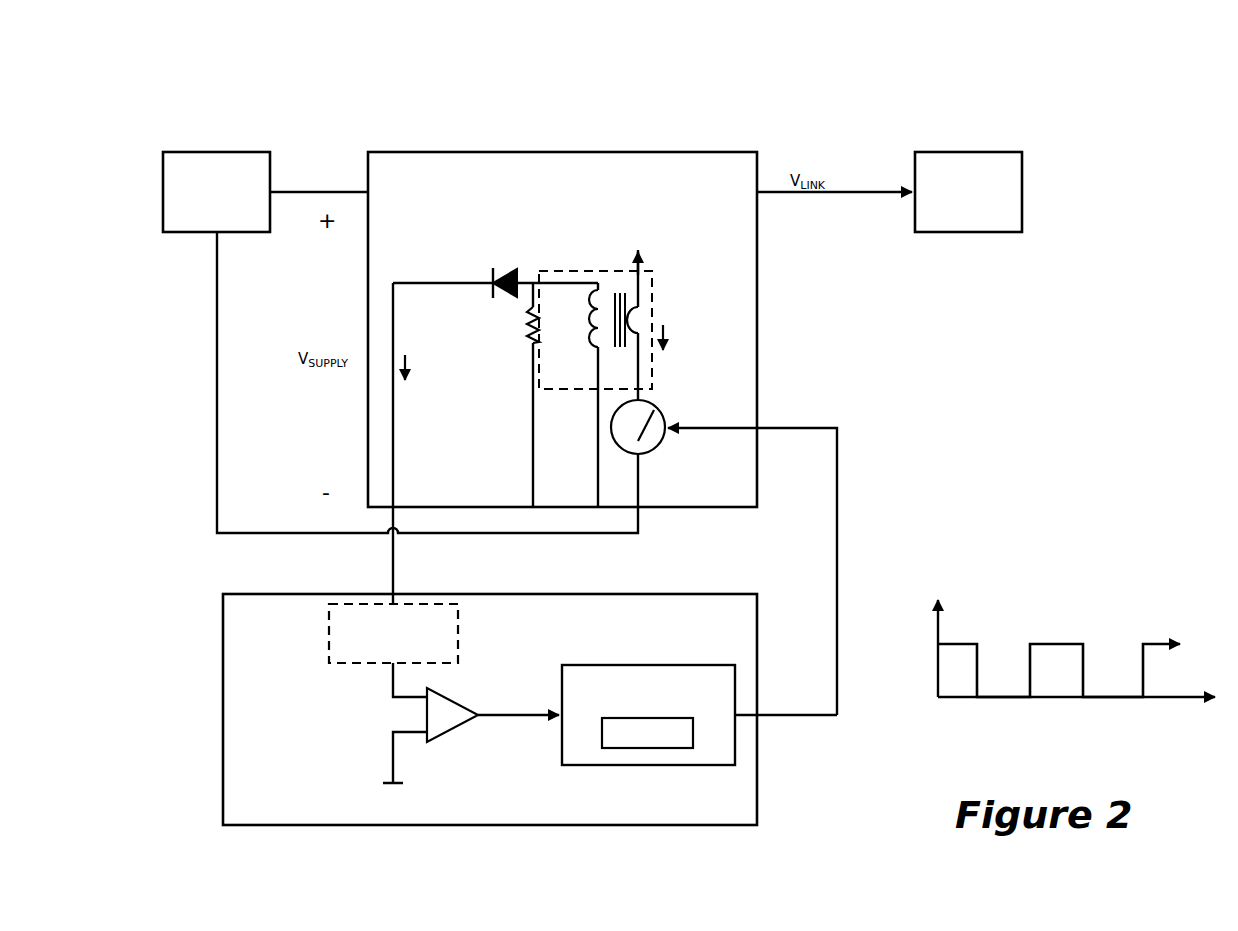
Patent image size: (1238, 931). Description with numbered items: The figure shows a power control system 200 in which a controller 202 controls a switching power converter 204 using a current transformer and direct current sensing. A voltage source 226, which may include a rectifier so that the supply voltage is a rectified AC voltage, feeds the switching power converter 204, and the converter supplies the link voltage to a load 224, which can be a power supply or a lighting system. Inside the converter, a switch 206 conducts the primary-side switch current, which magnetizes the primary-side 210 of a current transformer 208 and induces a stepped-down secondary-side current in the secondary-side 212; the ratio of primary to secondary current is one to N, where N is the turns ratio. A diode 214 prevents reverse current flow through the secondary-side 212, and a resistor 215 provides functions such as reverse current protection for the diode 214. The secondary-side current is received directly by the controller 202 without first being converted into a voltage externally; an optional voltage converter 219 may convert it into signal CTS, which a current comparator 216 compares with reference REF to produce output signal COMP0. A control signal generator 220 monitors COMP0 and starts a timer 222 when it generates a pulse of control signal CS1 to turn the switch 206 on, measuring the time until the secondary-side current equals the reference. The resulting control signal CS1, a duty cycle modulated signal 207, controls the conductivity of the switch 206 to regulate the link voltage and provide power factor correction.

The power control system 200 is at (848, 108).
The controller 202 is at (475, 594).
The switching power converter 204 is at (619, 152).
The switch 206 is at (656, 406).
The signal 207 is at (1147, 628).
The current transformer 208 is at (578, 271).
The primary-side 210 is at (630, 320).
The secondary-side 212 is at (590, 343).
The diode 214 is at (508, 270).
The resistor 215 is at (528, 343).
The current comparator 216 is at (477, 687).
The voltage converter 219 is at (458, 652).
The control signal generator 220 is at (660, 765).
The timer 222 is at (602, 733).
The load 224 is at (941, 152).
The voltage source 226 is at (203, 152).